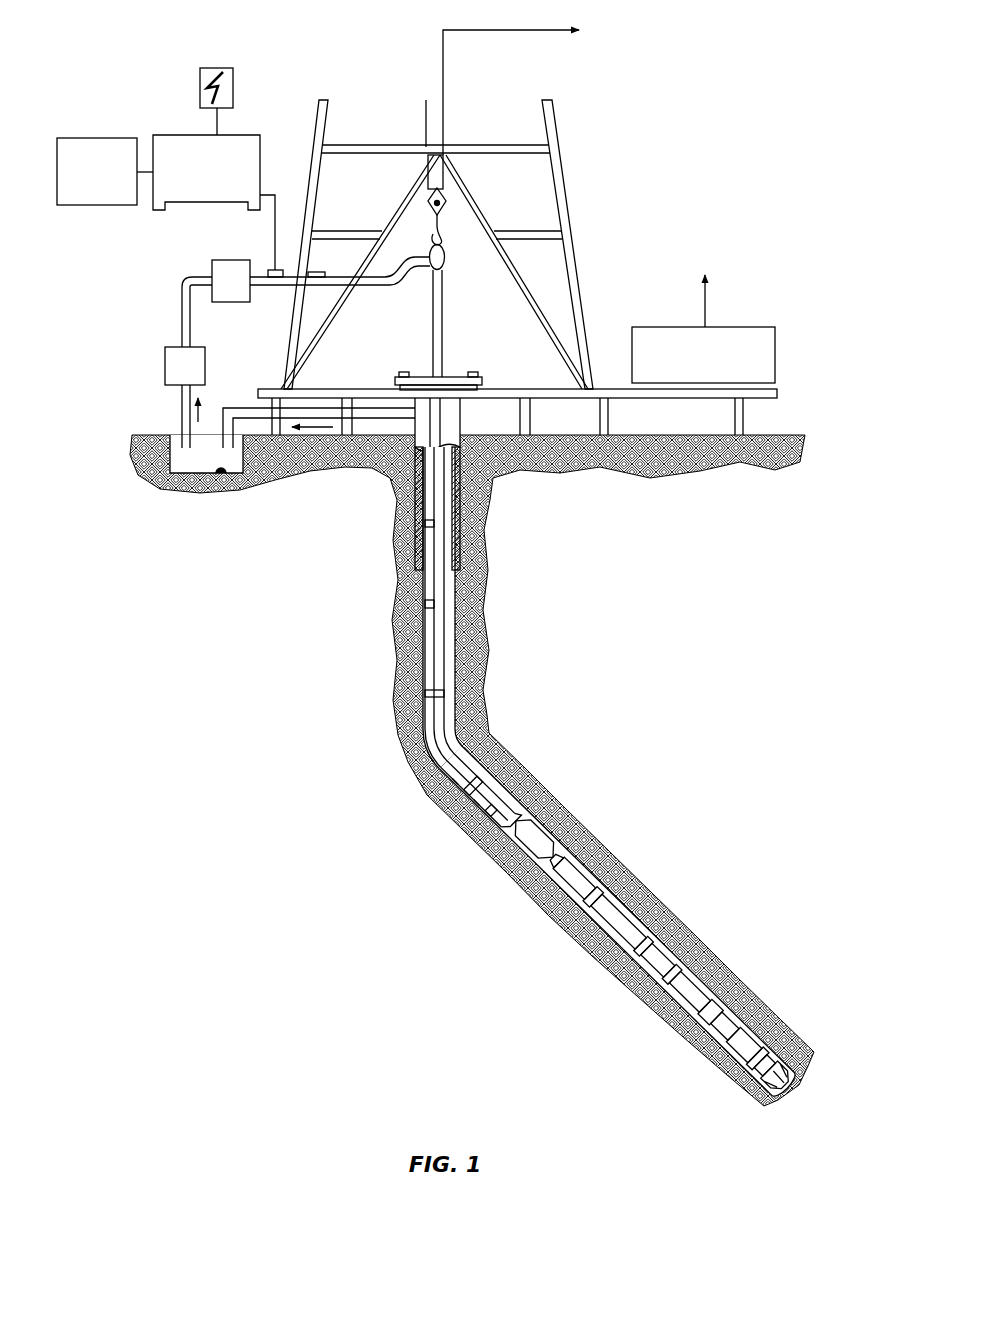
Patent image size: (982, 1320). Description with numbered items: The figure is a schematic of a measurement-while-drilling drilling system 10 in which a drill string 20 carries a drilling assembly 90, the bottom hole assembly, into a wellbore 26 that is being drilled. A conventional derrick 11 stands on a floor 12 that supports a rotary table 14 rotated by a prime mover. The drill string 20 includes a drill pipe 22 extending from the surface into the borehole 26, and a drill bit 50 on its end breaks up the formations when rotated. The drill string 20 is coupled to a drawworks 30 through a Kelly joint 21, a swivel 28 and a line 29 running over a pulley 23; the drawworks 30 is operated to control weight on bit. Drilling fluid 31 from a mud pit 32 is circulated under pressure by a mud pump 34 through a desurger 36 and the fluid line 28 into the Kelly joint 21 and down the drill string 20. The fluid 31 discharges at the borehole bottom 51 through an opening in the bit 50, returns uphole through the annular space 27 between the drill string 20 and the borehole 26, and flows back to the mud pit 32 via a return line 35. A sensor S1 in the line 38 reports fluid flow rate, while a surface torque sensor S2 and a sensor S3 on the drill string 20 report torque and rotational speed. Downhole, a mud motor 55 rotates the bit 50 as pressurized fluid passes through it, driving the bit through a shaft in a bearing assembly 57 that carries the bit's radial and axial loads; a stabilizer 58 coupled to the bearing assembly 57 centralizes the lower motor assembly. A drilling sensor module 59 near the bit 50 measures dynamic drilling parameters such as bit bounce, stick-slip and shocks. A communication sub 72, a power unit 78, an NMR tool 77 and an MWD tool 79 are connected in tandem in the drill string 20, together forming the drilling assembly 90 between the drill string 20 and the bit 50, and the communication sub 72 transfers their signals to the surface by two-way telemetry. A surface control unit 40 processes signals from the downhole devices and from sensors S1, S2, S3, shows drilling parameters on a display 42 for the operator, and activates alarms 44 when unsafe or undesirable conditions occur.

The drilling system 10 is at (342, 44).
The derrick 11 is at (574, 245).
The floor 12 is at (602, 388).
The rotary table 14 is at (452, 376).
The drill string 20 is at (454, 661).
The Kelly joint 21 is at (445, 297).
The drill pipe 22 is at (420, 635).
The pulley 23 is at (446, 201).
The wellbore 26 is at (456, 723).
The annular space 27 is at (468, 755).
The swivel 28 is at (430, 268).
The line 29 is at (446, 90).
The drawworks 30 is at (727, 327).
The drilling fluid 31 is at (193, 465).
The mud pit 32 is at (222, 474).
The mud pump 34 is at (172, 346).
The return line 35 is at (388, 419).
The desurger 36 is at (233, 259).
The line 38 is at (283, 287).
The surface control unit 40 is at (180, 134).
The display/monitor 42 is at (217, 67).
The alarms 44 is at (97, 137).
The drill bit 50 is at (788, 1057).
The borehole bottom 51 is at (760, 1106).
The mud motor 55 is at (633, 913).
The bearing assembly 57 is at (734, 1003).
The stabilizer 58 is at (742, 1030).
The drilling sensor module 59 is at (733, 1060).
The communication sub 72 is at (422, 743).
The NMR tool 77 is at (522, 848).
The power unit 78 is at (452, 775).
The MWD tool 79 is at (472, 798).
The drilling assembly 90 is at (617, 933).
The sensor S1 is at (313, 272).
The surface torque sensor S2 is at (475, 372).
The sensor S3 is at (405, 372).